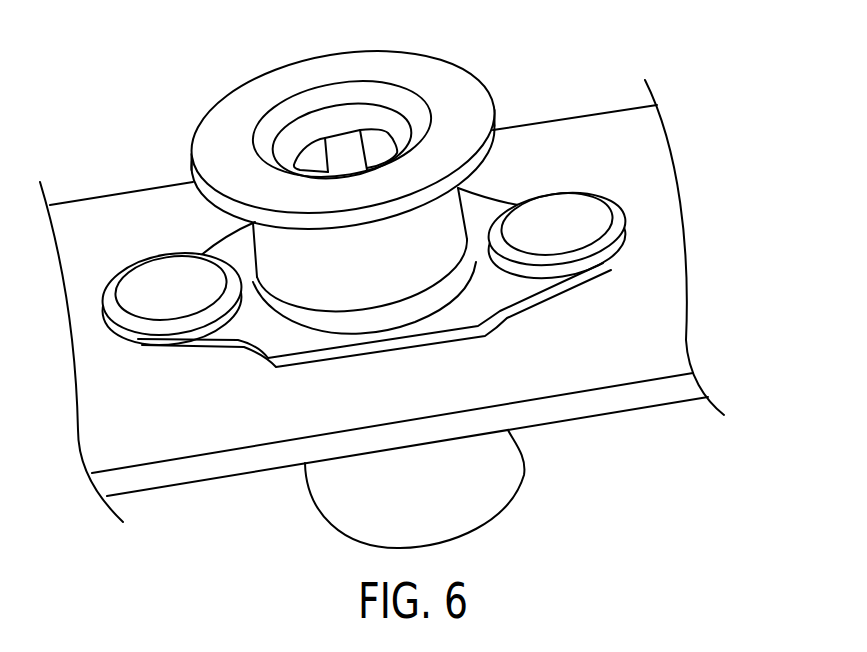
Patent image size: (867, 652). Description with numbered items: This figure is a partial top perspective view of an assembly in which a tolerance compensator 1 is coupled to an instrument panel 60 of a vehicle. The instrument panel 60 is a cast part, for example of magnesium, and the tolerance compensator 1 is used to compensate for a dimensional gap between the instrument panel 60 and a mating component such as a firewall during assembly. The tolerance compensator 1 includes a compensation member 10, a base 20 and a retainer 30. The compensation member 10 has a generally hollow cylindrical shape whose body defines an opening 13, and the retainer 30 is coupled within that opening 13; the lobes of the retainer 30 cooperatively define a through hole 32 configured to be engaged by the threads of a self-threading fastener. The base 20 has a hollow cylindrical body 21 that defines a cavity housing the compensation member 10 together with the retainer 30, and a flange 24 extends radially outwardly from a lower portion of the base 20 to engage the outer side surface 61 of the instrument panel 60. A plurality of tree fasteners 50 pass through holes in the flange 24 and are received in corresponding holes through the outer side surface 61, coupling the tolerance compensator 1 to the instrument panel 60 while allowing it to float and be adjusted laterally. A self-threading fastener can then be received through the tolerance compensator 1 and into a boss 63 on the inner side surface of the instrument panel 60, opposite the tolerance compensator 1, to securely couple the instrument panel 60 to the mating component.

The tolerance compensator 1 is at (508, 52).
The compensation member 10 is at (223, 120).
The opening 13 is at (290, 117).
The base 20 is at (325, 272).
The hollow cylindrical body 21 is at (438, 229).
The flange 24 is at (458, 305).
The retainer 30 is at (377, 147).
The through hole 32 is at (343, 150).
The tree fasteners 50 is at (158, 280).
The instrument panel 60 is at (200, 415).
The outer side surface 61 is at (626, 350).
The boss 63 is at (467, 492).